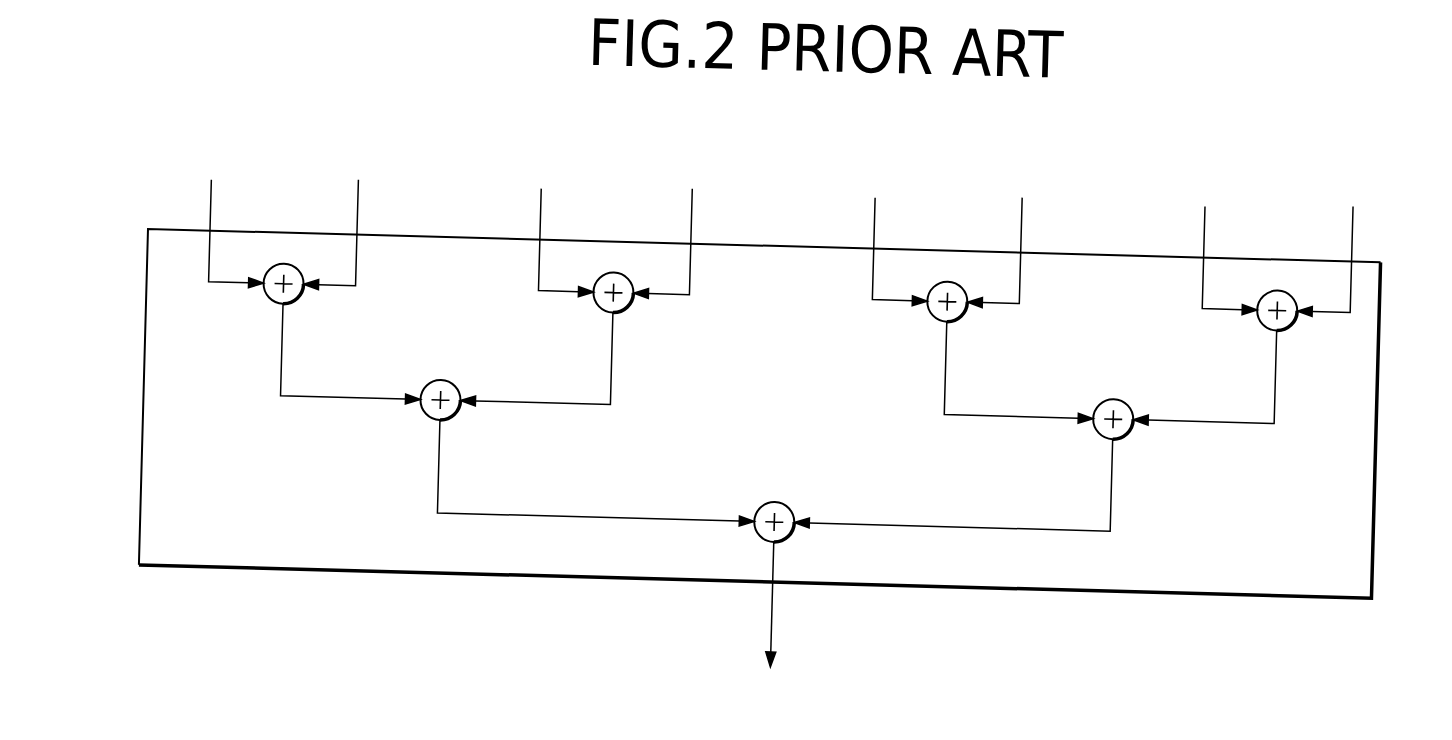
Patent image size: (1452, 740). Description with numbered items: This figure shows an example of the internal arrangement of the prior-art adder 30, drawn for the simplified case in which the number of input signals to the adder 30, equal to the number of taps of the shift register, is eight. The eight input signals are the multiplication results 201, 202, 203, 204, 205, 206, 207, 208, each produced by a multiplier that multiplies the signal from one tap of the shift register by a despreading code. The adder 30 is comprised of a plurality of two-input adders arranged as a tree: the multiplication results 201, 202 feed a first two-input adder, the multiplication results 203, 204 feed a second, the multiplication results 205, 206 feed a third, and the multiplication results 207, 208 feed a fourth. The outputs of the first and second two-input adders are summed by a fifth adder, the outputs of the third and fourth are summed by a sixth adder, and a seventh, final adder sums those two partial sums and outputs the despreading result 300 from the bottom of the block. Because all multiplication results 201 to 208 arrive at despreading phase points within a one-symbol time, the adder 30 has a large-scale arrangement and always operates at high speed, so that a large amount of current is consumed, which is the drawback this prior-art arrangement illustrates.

The adder 30 is at (297, 556).
The multiplication result 201 is at (211, 183).
The multiplication result 202 is at (358, 179).
The multiplication result 203 is at (541, 183).
The multiplication result 204 is at (692, 179).
The multiplication result 205 is at (875, 183).
The multiplication result 206 is at (1022, 179).
The multiplication result 207 is at (1205, 183).
The multiplication result 208 is at (1374, 260).
The despreading result 300 is at (783, 610).